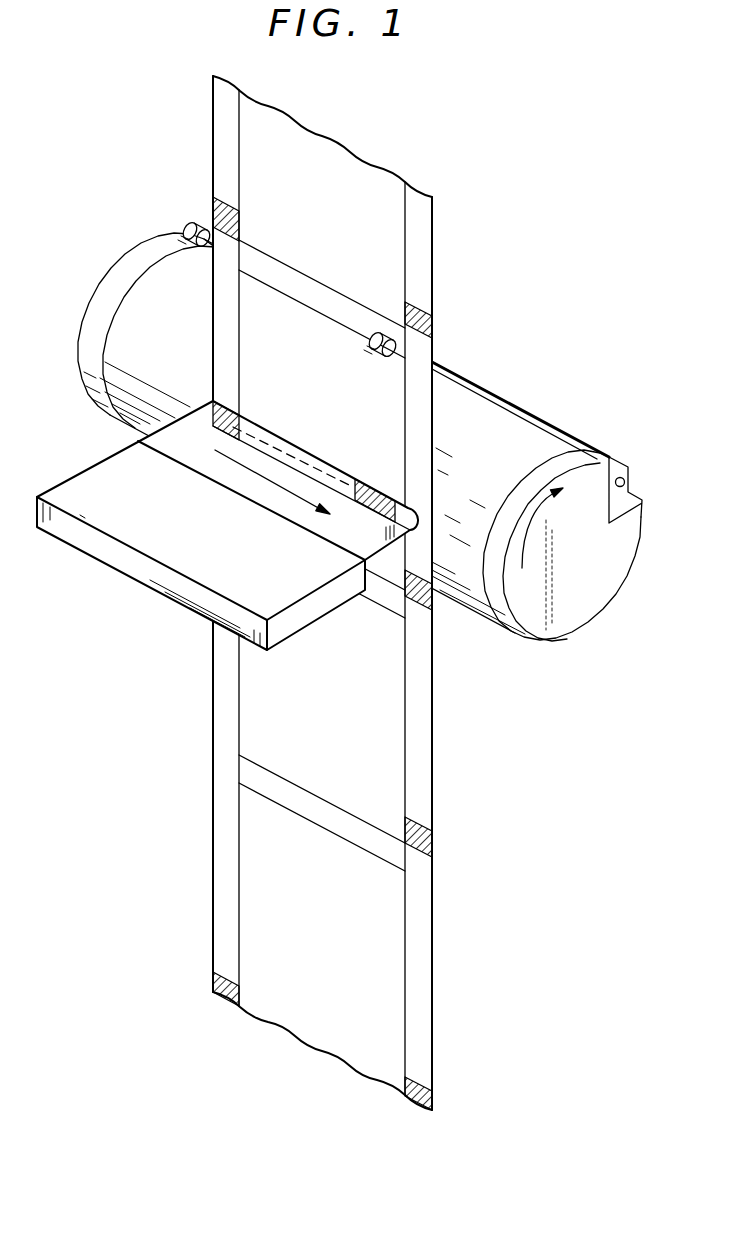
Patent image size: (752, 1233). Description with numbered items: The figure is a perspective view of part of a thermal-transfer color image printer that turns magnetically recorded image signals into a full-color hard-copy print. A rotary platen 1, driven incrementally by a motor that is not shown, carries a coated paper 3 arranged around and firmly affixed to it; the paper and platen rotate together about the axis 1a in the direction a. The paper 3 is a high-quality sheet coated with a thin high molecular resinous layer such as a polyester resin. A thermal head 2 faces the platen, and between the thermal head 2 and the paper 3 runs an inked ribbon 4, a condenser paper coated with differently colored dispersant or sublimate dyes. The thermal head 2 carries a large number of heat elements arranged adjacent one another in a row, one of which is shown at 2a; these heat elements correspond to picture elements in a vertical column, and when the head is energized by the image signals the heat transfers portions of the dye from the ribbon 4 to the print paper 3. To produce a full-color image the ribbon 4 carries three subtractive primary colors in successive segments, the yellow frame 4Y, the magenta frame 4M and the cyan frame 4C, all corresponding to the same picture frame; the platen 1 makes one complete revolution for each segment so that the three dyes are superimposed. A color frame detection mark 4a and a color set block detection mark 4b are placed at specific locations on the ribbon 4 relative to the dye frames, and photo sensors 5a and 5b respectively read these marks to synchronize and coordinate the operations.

The rotary platen 1 is at (592, 607).
The axis 1a is at (581, 552).
The thermal head 2 is at (138, 441).
The heat element 2a is at (366, 492).
The coated paper 3 is at (562, 428).
The inked ribbon 4 is at (425, 693).
The color frame detection mark 4a is at (434, 322).
The color set block detection mark 4b is at (213, 207).
The cyan frame 4C is at (322, 574).
The yellow frame 4Y is at (322, 430).
The magenta frame 4M is at (322, 686).
The photo sensor 5a is at (377, 353).
The photo sensor 5b is at (188, 227).
The direction of rotation a is at (548, 498).